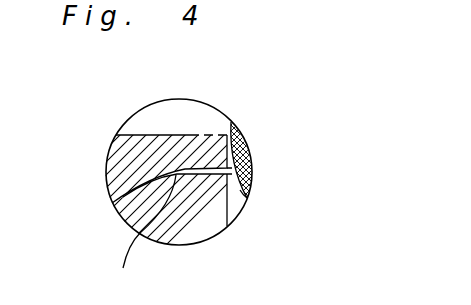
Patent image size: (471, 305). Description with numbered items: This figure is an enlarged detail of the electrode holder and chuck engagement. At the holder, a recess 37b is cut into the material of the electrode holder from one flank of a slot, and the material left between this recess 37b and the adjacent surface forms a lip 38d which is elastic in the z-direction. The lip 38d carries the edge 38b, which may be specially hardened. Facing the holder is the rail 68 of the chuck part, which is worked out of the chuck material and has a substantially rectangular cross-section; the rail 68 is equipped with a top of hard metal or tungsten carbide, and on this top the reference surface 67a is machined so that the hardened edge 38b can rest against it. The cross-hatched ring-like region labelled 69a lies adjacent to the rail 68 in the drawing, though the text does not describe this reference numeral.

The recess 37b is at (125, 196).
The edge 38b is at (231, 137).
The lip 38d is at (190, 137).
The reference surface 67a is at (227, 132).
The rail 68 is at (252, 179).
The seal lip 69a is at (238, 196).